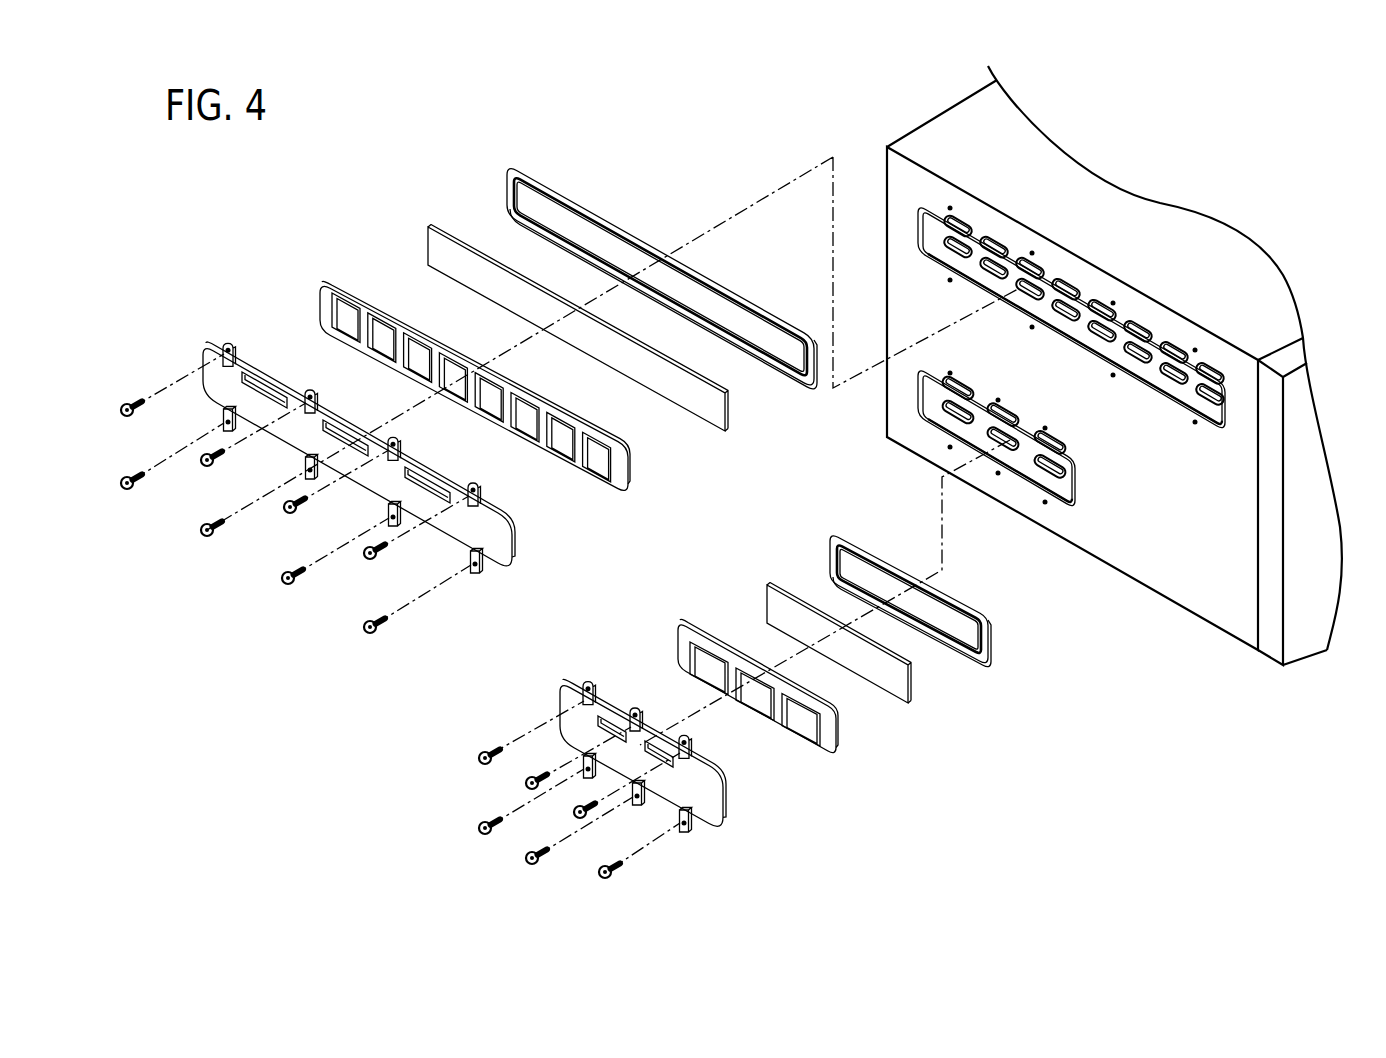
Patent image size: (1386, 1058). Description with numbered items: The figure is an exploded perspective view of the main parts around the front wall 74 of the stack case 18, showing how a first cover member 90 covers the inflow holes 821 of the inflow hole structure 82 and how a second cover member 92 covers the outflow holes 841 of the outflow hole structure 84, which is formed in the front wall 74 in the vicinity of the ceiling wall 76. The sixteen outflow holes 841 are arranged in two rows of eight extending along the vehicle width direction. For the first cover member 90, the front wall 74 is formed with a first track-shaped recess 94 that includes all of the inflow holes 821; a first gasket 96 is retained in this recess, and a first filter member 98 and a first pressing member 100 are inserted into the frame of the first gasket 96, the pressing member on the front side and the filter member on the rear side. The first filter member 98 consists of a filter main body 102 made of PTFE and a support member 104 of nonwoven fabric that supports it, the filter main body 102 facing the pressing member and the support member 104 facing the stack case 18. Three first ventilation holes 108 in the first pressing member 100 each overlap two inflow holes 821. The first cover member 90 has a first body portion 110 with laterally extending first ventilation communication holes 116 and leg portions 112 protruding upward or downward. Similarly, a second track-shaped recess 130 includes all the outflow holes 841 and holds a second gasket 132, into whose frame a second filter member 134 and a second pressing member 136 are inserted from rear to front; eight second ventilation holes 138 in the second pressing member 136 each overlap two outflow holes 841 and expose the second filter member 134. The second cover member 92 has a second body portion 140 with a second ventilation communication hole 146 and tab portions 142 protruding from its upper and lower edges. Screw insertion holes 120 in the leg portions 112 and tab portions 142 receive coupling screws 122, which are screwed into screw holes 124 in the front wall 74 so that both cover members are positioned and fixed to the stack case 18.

The stack case 18 is at (912, 112).
The front wall 74 is at (1156, 578).
The ceiling wall 76 is at (1081, 187).
The inflow hole structure 82 is at (1074, 452).
The inflow holes 821 is at (976, 392).
The outflow hole structure 84 is at (1142, 318).
The outflow holes 841 is at (1103, 300).
The first cover member 90 is at (728, 828).
The second cover member 92 is at (183, 360).
The first track-shaped recess 94 is at (1072, 470).
The first gasket 96 is at (840, 533).
The first filter member 98 is at (778, 540).
The first pressing member 100 is at (835, 750).
The filter main body 102 is at (440, 252).
The support member 104 is at (465, 237).
The first ventilation holes 108 is at (708, 658).
The first body portion 110 is at (708, 799).
The leg portions 112 is at (586, 690).
The first ventilation communication holes 116 is at (605, 718).
The screw insertion holes 120 is at (224, 346).
The coupling screw 122 is at (202, 465).
The screw hole 124 is at (1111, 375).
The second track-shaped recess 130 is at (1152, 368).
The second gasket 132 is at (548, 180).
The second filter member 134 is at (450, 188).
The second pressing member 136 is at (333, 277).
The second ventilation holes 138 is at (452, 368).
The second body portion 140 is at (494, 541).
The tab portions 142 is at (232, 343).
The second ventilation communication hole 146 is at (260, 381).